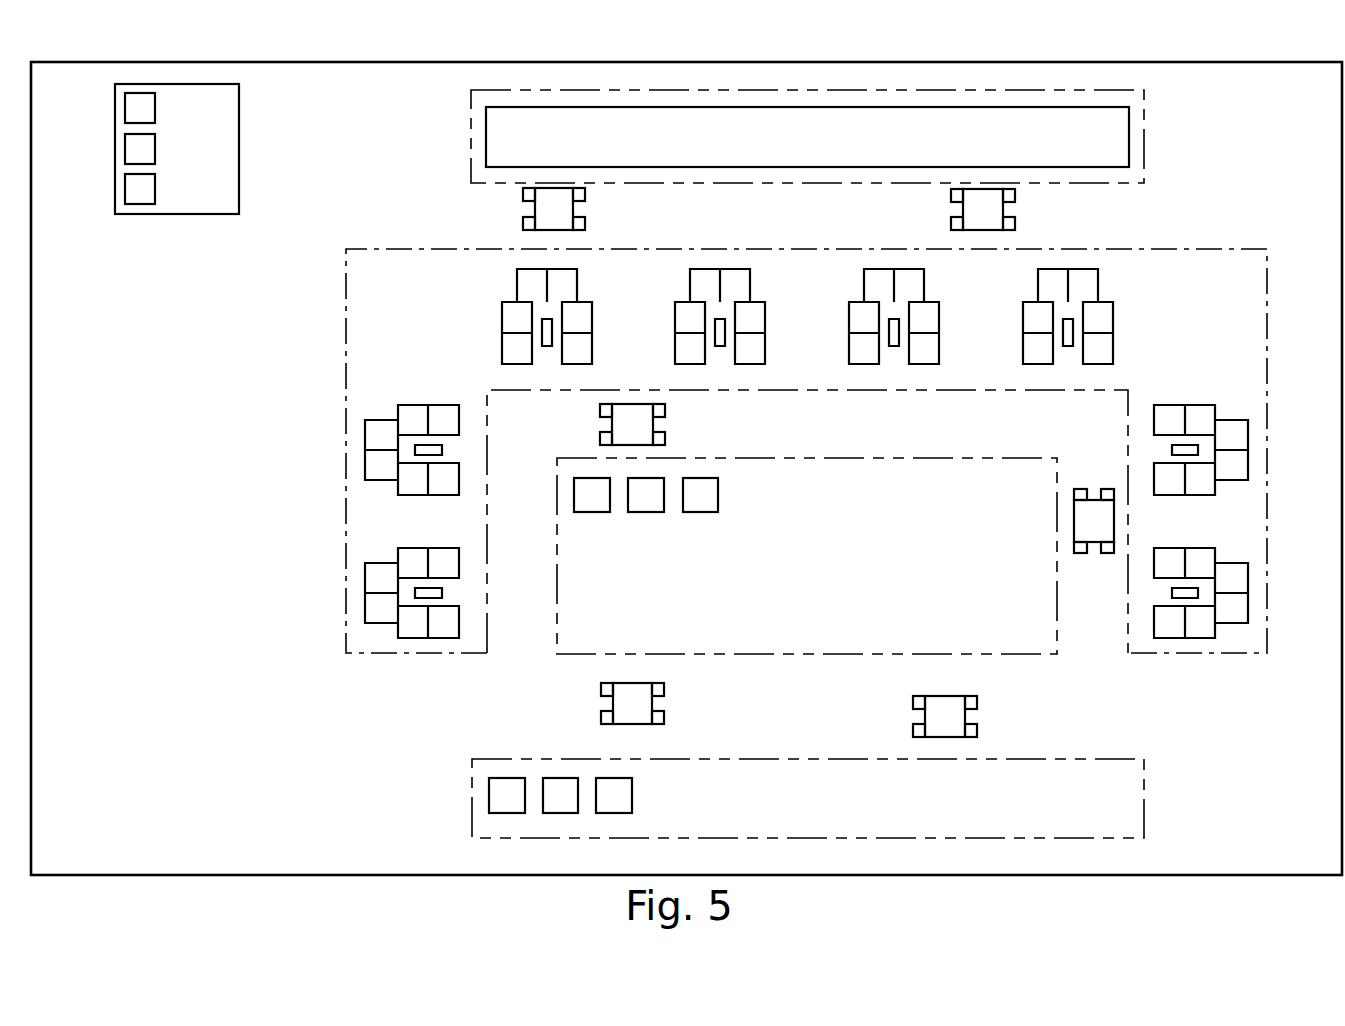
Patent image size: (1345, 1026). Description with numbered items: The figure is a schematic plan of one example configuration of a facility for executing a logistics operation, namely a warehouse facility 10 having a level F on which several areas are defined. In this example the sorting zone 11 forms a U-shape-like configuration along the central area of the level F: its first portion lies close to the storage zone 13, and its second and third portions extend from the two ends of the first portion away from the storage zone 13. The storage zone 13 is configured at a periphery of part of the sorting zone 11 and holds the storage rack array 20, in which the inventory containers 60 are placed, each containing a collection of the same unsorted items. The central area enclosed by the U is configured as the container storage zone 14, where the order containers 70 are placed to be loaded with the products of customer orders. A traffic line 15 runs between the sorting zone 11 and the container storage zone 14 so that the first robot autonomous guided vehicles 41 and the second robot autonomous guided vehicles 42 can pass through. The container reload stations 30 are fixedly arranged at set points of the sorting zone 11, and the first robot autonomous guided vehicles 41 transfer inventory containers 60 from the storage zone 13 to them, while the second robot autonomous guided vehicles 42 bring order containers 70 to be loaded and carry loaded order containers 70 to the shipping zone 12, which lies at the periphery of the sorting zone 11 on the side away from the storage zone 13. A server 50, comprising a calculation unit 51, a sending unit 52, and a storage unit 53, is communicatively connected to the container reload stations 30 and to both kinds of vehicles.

The warehouse facility 10 is at (1237, 61).
The level F is at (745, 72).
The sorting zone 11 is at (1150, 258).
The shipping zone 12 is at (1130, 818).
The storage zone 13 is at (1138, 147).
The container storage zone 14 is at (800, 640).
The traffic line 15 is at (523, 607).
The storage rack array 20 is at (1103, 118).
The container reload station 30 is at (386, 628).
The first robot autonomous guided vehicle 41 is at (545, 215).
The second robot autonomous guided vehicle 42 is at (622, 430).
The server 50 is at (230, 105).
The calculation unit 51 is at (128, 107).
The sending unit 52 is at (128, 148).
The storage unit 53 is at (128, 189).
The inventory container 60 is at (378, 435).
The order container 70 is at (593, 500).